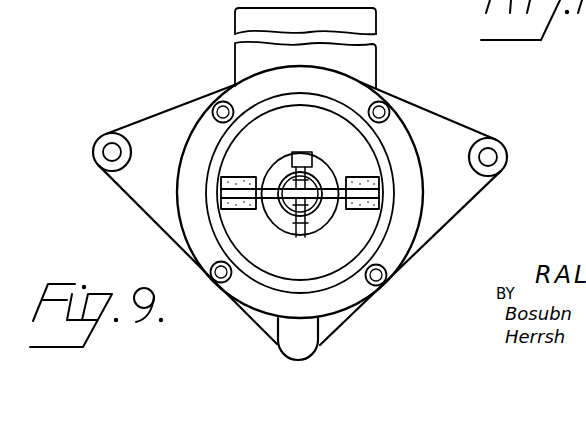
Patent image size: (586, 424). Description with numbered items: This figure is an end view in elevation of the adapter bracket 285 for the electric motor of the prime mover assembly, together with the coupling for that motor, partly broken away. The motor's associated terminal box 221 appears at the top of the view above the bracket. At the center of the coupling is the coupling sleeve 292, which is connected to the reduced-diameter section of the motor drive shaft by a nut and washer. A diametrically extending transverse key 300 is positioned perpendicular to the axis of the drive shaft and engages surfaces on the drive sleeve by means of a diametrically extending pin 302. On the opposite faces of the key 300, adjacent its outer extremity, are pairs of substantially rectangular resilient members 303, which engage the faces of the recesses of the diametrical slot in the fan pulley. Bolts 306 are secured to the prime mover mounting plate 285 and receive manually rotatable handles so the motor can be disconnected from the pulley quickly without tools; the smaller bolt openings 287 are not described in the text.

The terminal box 221 is at (360, 67).
The adapter bracket 285 is at (448, 137).
The bolt holes 287 is at (215, 106).
The coupling sleeve 292 is at (278, 172).
The key 300 is at (327, 193).
The pin 302 is at (300, 152).
The resilient members 303 is at (222, 203).
The bolts 306 is at (110, 156).